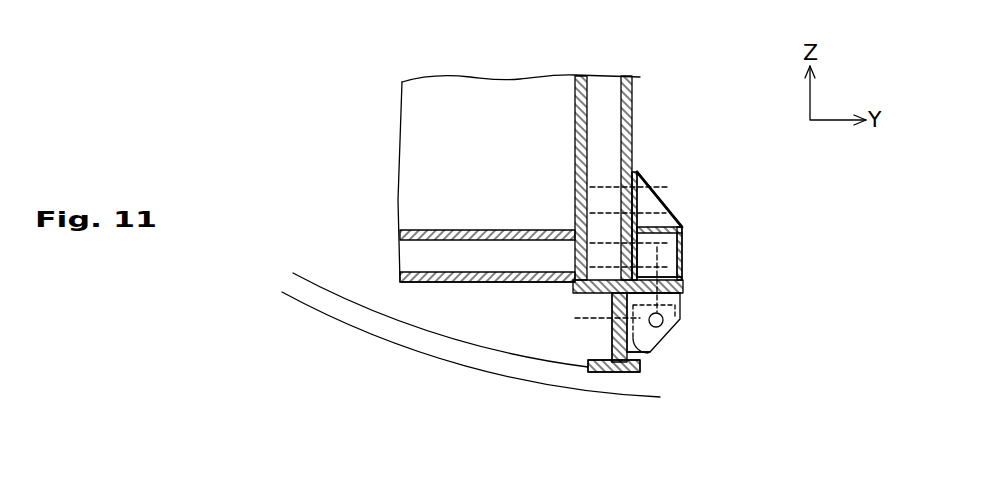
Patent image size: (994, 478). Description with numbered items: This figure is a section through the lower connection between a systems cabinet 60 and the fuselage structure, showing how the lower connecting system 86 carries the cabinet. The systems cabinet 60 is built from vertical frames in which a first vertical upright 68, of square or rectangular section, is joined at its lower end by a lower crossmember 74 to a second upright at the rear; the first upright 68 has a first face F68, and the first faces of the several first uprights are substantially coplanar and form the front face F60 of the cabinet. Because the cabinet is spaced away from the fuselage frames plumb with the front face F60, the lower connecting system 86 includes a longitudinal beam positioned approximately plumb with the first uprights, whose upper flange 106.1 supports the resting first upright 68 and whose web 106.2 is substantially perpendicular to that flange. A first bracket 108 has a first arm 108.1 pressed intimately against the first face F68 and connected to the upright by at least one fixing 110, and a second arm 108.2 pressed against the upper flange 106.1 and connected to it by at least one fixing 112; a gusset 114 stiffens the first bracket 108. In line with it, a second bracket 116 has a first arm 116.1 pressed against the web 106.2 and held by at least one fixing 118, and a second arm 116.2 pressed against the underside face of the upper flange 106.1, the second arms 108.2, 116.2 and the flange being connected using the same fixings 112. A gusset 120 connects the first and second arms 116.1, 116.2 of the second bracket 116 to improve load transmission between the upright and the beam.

The systems cabinet 60 is at (420, 113).
The first vertical upright 68 is at (604, 100).
The first face F68 is at (634, 80).
The front face F60 is at (638, 102).
The lower crossmember 74 is at (396, 257).
The upper flange 106.1 is at (573, 288).
The web 106.2 is at (612, 340).
The first bracket 108 is at (679, 180).
The first arm 108.1 is at (641, 200).
The second arm 108.2 is at (686, 279).
The fixing 110 is at (602, 243).
The fixing 112 is at (660, 257).
The gusset 114 is at (670, 212).
The second bracket 116 is at (668, 334).
The first arm 116.1 is at (653, 354).
The second arm 116.2 is at (681, 297).
The fixing 118 is at (598, 332).
The gusset 120 is at (681, 321).
The lower connecting system 86 is at (572, 340).